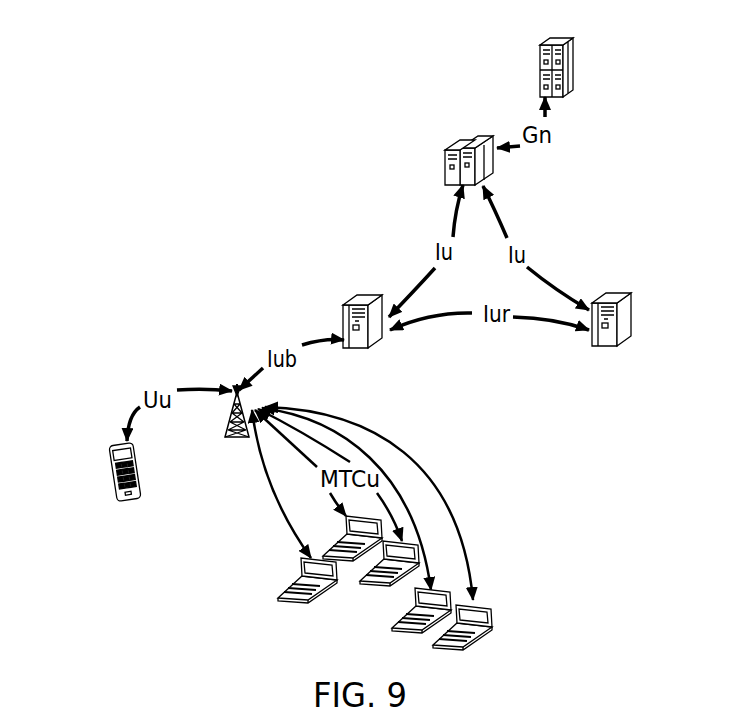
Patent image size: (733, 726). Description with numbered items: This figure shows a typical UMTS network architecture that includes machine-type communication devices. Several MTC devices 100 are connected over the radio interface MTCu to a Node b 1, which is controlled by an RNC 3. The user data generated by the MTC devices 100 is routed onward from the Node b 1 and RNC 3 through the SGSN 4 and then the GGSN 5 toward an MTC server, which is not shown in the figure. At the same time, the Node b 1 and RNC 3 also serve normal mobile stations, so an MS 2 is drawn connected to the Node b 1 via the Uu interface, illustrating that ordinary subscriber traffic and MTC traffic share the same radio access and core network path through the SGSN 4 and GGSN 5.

The Node b 1 is at (230, 473).
The MS 2 is at (75, 470).
The RNC 3 is at (408, 367).
The SGSN 4 is at (423, 115).
The GGSN 5 is at (593, 16).
The MTC devices 100 is at (243, 628).